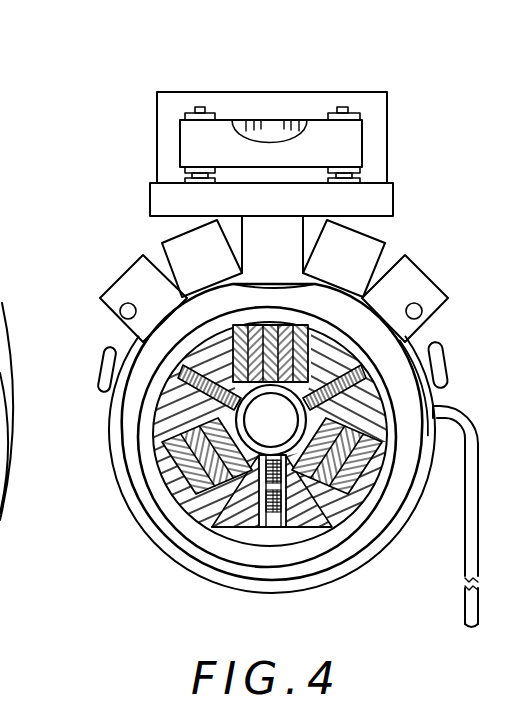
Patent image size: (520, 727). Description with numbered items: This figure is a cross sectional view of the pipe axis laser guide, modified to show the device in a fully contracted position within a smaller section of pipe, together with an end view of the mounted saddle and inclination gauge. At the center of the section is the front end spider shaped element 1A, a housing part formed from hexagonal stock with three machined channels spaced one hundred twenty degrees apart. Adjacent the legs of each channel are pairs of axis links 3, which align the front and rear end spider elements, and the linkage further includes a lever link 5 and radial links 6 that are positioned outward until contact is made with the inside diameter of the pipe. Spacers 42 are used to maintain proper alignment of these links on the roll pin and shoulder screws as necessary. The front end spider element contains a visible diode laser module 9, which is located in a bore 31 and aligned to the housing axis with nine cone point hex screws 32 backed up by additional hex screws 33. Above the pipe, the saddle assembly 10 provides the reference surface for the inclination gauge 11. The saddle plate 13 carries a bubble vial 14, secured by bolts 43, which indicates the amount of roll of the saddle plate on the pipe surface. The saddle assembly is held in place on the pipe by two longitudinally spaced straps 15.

The front end spider shaped element 1A is at (172, 413).
The axis links 3 is at (190, 448).
The lever link 5 is at (210, 465).
The radial link 6 is at (215, 498).
The visible diode laser module 9 is at (271, 420).
The saddle assembly 10 is at (427, 282).
The inclination gauge 11 is at (267, 92).
The saddle plate 13 is at (151, 189).
The bubble vial 14 is at (365, 135).
The straps 15 is at (478, 470).
The bore 31 is at (290, 480).
The cone point hex screws 32 is at (260, 460).
The hex screws 33 is at (288, 457).
The spacers 42 is at (230, 483).
The bolts 43 is at (200, 107).